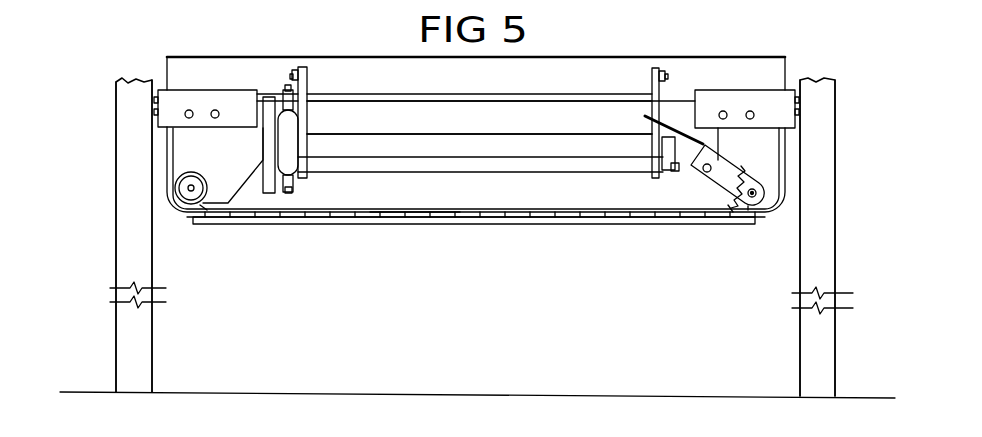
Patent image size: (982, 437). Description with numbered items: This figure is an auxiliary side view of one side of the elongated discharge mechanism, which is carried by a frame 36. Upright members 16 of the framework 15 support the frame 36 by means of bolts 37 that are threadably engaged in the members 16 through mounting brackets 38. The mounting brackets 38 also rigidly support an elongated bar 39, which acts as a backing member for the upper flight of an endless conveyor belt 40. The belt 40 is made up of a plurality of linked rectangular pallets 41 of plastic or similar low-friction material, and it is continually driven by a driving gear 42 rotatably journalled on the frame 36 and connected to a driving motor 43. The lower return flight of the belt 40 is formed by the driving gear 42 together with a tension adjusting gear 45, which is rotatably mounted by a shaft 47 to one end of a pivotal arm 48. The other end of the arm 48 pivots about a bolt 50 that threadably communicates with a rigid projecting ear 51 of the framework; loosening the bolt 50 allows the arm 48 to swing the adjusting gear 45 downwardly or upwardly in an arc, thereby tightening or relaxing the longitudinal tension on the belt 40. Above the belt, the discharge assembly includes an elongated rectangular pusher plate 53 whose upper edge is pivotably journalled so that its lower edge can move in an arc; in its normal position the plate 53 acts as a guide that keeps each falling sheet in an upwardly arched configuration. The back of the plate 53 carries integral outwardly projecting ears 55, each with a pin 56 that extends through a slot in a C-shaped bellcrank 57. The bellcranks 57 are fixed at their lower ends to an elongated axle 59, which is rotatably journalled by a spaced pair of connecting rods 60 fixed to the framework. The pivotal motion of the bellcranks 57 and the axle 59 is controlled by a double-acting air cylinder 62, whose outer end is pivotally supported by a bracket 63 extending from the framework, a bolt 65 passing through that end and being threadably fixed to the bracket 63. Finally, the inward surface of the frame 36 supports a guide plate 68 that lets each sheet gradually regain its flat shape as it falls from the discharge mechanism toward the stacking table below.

The framework 15 is at (153, 325).
The upright members 16 is at (124, 204).
The frame 36 is at (527, 136).
The bolts 37 is at (156, 113).
The mounting brackets 38 is at (182, 97).
The elongated bar 39 is at (458, 117).
The endless conveyor belt 40 is at (477, 215).
The pallets 41 is at (455, 212).
The driving gear 42 is at (203, 207).
The driving motor 43 is at (192, 182).
The tension adjusting gear 45 is at (733, 210).
The shaft 47 is at (748, 208).
The pivotal arm 48 is at (723, 178).
The bolt 50 is at (712, 162).
The projecting ear 51 is at (646, 116).
The pusher plate 53 is at (386, 63).
The ears 55 is at (297, 70).
The pin 56 is at (291, 77).
The bellcrank 57 is at (308, 80).
The axle 59 is at (535, 163).
The connecting rods 60 is at (662, 148).
The air cylinder 62 is at (292, 143).
The bracket 63 is at (277, 142).
The bolt 65 is at (297, 187).
The guide plate 68 is at (583, 225).